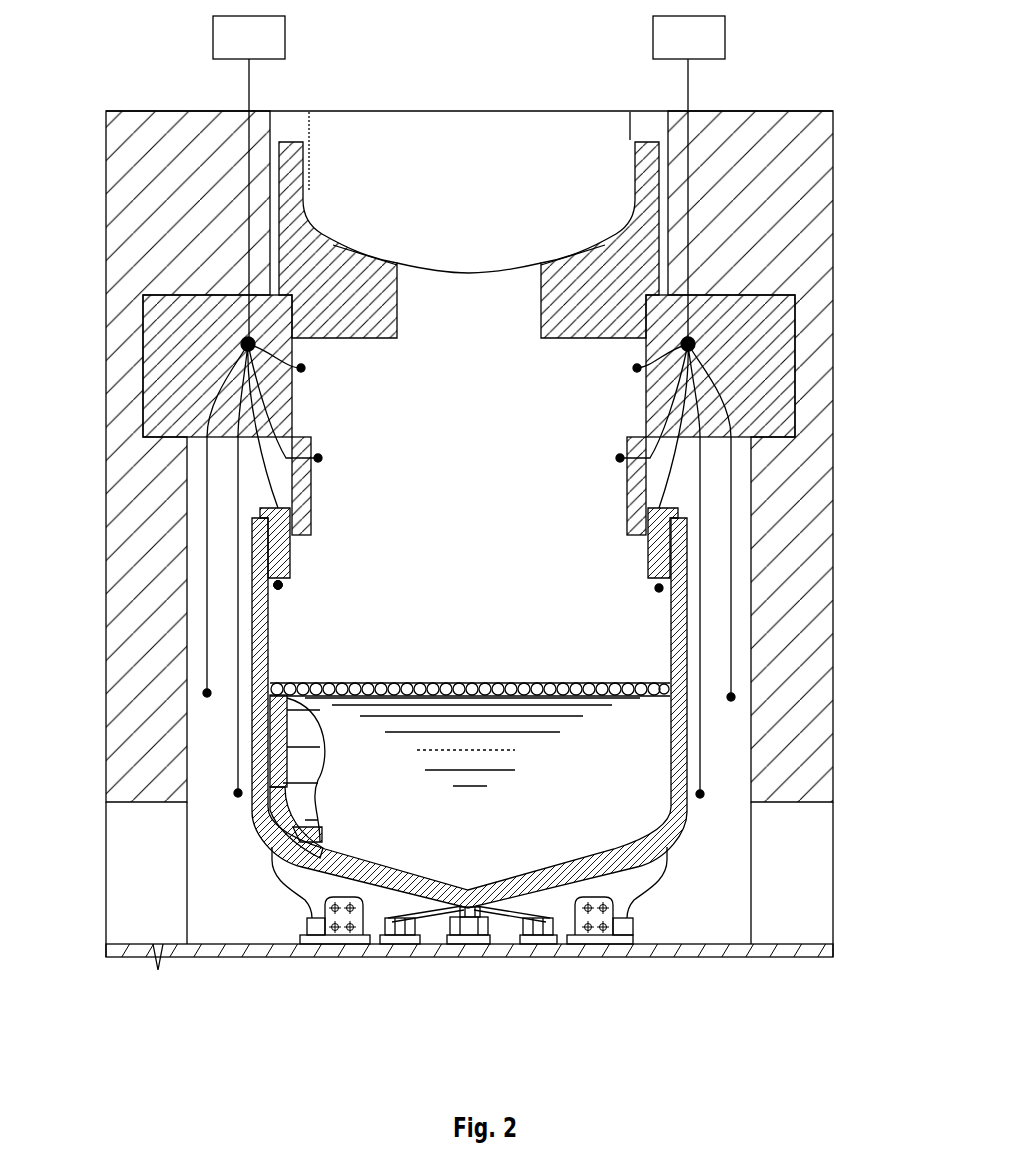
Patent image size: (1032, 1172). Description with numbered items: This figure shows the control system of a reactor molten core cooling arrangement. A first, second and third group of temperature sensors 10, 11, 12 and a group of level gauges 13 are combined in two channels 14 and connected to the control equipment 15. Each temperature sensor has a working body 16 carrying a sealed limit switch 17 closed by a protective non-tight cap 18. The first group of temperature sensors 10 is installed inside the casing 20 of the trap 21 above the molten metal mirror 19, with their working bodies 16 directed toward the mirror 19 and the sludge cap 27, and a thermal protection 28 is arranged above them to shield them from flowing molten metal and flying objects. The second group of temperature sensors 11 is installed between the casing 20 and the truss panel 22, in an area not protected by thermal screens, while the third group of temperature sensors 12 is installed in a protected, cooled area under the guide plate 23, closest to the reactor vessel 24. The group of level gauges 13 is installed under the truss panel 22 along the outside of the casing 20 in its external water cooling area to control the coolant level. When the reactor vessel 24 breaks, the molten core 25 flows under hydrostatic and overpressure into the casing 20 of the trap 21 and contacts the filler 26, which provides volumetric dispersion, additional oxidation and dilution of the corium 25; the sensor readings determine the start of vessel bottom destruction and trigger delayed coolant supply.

The first group of temperature sensors 10 is at (278, 585).
The second group of temperature sensors 11 is at (318, 458).
The third group of temperature sensors 12 is at (301, 368).
The group of level gauges 13 is at (238, 793).
The channels 14 is at (250, 248).
The control equipment 15 is at (248, 42).
The working bodies 16 is at (70, 600).
The sealed limit switches 17 is at (70, 669).
The protective non-tight caps 18 is at (278, 585).
The molten metal mirror 19 is at (527, 683).
The casing 20 is at (662, 838).
The trap 21 is at (468, 498).
The truss panel 22 is at (775, 305).
The guide plate 23 is at (633, 152).
The reactor vessel 24 is at (453, 133).
The molten core 25 is at (510, 750).
The filler 26 is at (262, 818).
The sludge cap 27 is at (597, 681).
The thermal protection 28 is at (670, 527).